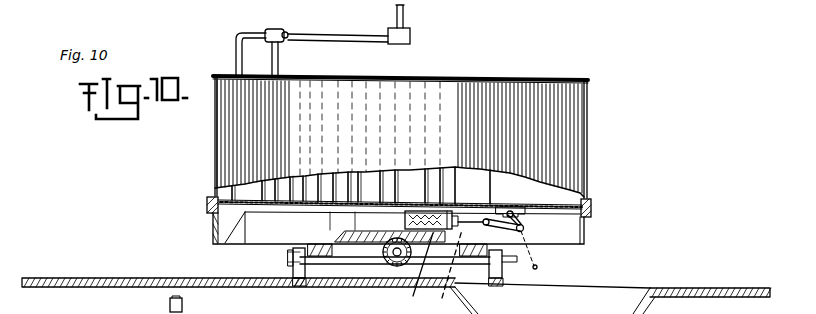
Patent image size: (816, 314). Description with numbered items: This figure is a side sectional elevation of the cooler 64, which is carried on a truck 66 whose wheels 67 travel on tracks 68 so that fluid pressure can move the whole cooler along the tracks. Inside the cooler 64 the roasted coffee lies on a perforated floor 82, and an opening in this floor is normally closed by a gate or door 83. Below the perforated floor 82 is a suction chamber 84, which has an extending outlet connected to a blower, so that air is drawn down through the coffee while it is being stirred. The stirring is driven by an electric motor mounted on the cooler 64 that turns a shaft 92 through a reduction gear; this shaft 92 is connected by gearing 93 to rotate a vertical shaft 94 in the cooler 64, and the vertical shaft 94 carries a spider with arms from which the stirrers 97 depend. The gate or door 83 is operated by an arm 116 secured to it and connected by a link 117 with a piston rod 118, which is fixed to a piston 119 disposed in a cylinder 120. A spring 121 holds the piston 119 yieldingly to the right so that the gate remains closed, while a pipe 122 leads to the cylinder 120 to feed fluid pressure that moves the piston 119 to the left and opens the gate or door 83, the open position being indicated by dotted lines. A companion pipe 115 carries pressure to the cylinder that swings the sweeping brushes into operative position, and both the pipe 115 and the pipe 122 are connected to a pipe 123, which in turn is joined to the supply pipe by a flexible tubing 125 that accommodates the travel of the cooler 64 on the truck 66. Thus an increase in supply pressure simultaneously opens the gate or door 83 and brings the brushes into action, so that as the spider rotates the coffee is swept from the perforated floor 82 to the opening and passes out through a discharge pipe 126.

The cooler 64 is at (586, 109).
The truck 66 is at (290, 262).
The wheels 67 is at (306, 266).
The tracks 68 is at (298, 286).
The perforated floor 82 is at (226, 206).
The gate or door 83 is at (562, 205).
The suction chamber 84 is at (220, 229).
The shaft 92 is at (390, 259).
The gearing 93 is at (417, 273).
The vertical shaft 94 is at (388, 199).
The stirrers 97 is at (450, 173).
The pipe 115 is at (280, 60).
The arm 116 is at (528, 222).
The link 117 is at (505, 230).
The piston rod 118 is at (480, 219).
The piston 119 is at (449, 272).
The cylinder 120 is at (422, 210).
The spring 121 is at (458, 202).
The pipe 122 is at (236, 52).
The pipe 123 is at (356, 35).
The flexible tubing 125 is at (410, 20).
The discharge pipe 126 is at (624, 291).